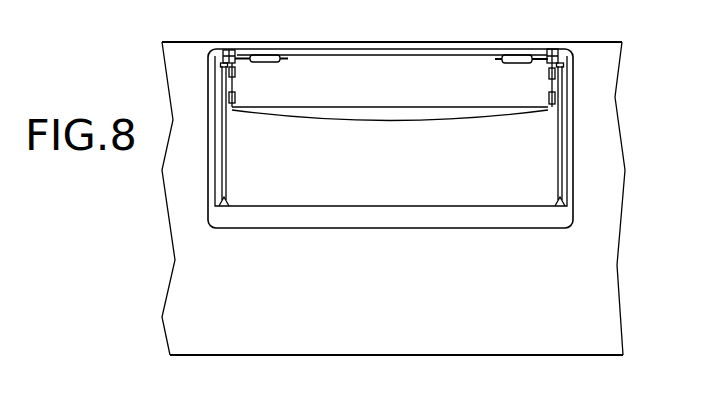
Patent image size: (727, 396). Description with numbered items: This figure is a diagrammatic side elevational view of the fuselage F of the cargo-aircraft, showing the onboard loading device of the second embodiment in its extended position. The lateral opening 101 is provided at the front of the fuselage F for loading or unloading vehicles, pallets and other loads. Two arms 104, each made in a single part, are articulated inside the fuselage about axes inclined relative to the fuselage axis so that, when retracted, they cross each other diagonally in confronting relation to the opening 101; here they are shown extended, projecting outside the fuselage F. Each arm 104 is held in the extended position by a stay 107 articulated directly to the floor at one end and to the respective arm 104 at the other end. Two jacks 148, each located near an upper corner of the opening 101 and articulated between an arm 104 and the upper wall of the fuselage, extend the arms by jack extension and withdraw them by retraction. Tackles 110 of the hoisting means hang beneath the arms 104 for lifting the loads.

The lateral opening 101 is at (389, 228).
The arm 104 is at (227, 50).
The stay 107 is at (228, 177).
The tackle 110 is at (246, 91).
The jack 148 is at (262, 58).
The fuselage F is at (568, 354).